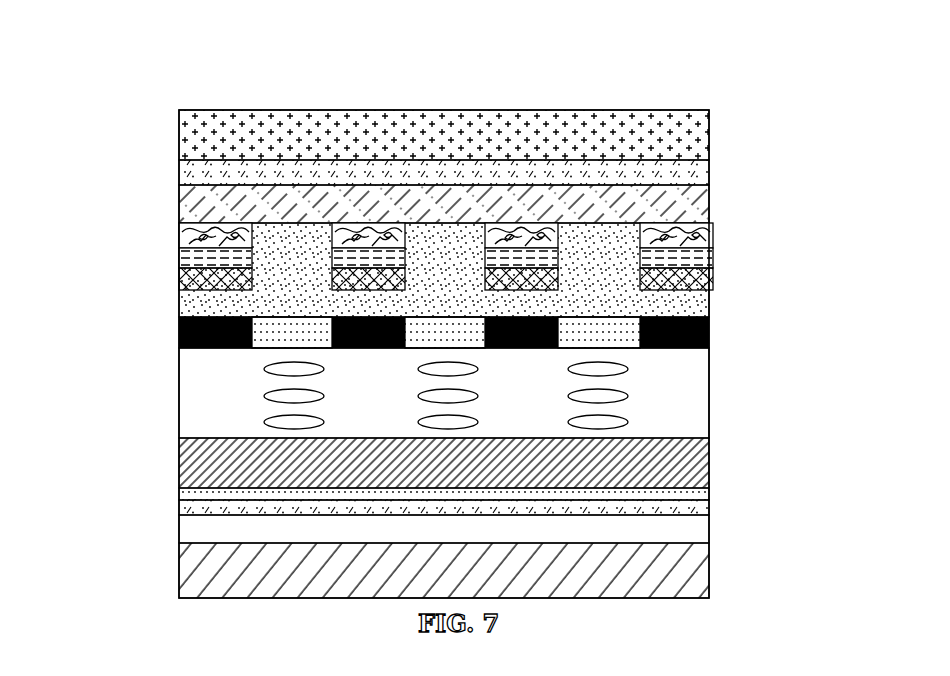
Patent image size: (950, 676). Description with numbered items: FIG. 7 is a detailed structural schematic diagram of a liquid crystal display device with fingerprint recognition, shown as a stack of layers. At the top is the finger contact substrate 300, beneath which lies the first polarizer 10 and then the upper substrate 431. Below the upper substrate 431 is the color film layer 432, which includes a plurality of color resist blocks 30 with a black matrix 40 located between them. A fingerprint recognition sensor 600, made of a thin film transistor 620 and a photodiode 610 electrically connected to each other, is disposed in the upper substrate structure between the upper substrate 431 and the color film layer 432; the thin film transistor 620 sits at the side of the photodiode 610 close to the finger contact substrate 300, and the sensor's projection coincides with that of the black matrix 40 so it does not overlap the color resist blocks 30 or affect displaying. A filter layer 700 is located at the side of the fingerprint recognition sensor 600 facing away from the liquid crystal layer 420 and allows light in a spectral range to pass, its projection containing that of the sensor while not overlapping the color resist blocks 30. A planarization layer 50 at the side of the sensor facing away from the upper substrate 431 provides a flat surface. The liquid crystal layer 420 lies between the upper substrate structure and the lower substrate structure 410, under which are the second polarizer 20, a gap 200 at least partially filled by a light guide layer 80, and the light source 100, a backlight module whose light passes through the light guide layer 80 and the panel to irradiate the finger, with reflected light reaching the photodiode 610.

The finger contact substrate 300 is at (709, 124).
The first polarizer 10 is at (709, 163).
The upper substrate 431 is at (709, 200).
The filter layer 700 is at (709, 236).
The planarization layer 50 is at (709, 297).
The fingerprint recognition sensor 600 is at (356, 273).
The thin film transistor 620 is at (179, 253).
The photodiode 610 is at (179, 278).
The black matrix 40 is at (459, 337).
The color film layer 432 is at (716, 335).
The color resist blocks 30 is at (446, 332).
The liquid crystal layer 420 is at (706, 392).
The lower substrate structure 410 is at (708, 464).
The gap 200 is at (179, 491).
The light guide layer 80 is at (179, 512).
The second polarizer 20 is at (706, 533).
The light source 100 is at (706, 572).